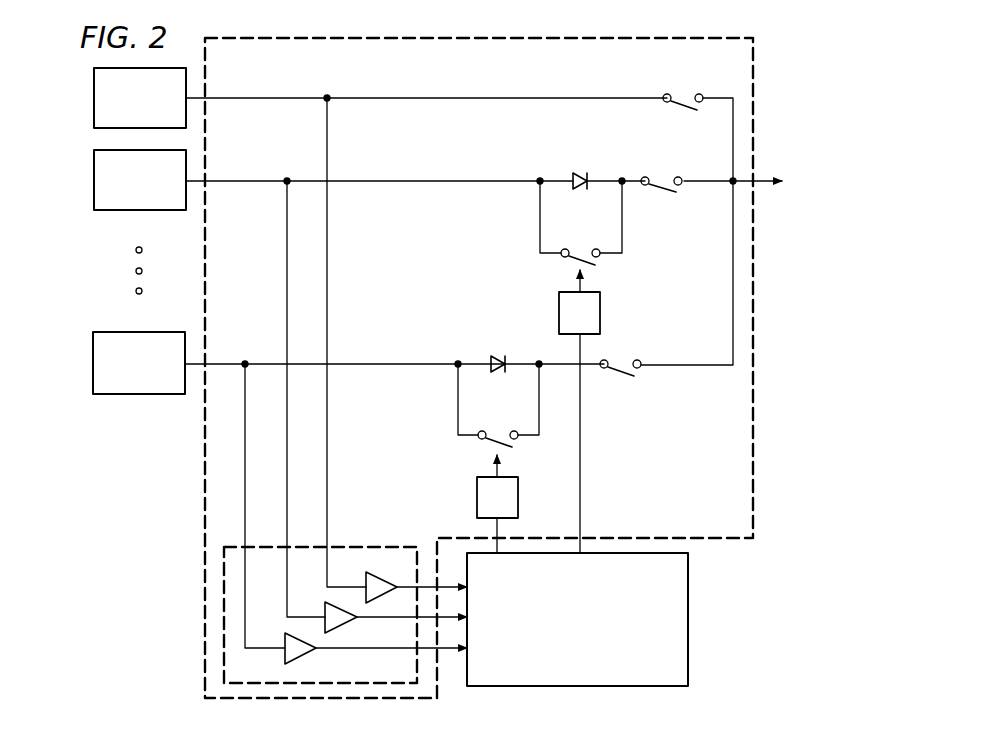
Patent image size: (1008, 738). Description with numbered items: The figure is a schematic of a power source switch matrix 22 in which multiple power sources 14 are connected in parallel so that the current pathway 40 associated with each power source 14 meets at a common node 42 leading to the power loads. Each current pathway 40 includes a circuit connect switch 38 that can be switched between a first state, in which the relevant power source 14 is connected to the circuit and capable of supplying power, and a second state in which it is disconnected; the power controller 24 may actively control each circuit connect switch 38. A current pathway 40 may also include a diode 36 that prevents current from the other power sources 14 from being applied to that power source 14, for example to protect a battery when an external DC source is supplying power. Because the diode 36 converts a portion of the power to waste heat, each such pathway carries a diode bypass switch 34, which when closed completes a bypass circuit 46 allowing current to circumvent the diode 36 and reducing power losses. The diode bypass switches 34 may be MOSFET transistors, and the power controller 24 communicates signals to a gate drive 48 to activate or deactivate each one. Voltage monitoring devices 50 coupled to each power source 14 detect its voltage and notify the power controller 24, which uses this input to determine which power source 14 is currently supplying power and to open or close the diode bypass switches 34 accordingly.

The power source 14 is at (94, 96).
The power source switch matrix 22 is at (204, 515).
The power controller 24 is at (566, 655).
The diode bypass switch 34 is at (579, 248).
The diode 36 is at (582, 176).
The circuit connect switch 38 is at (687, 97).
The current pathway 40 is at (488, 97).
The common node 42 is at (733, 180).
The bypass circuit 46 is at (540, 218).
The gate drive 48 is at (559, 300).
The voltage monitoring device 50 is at (379, 546).